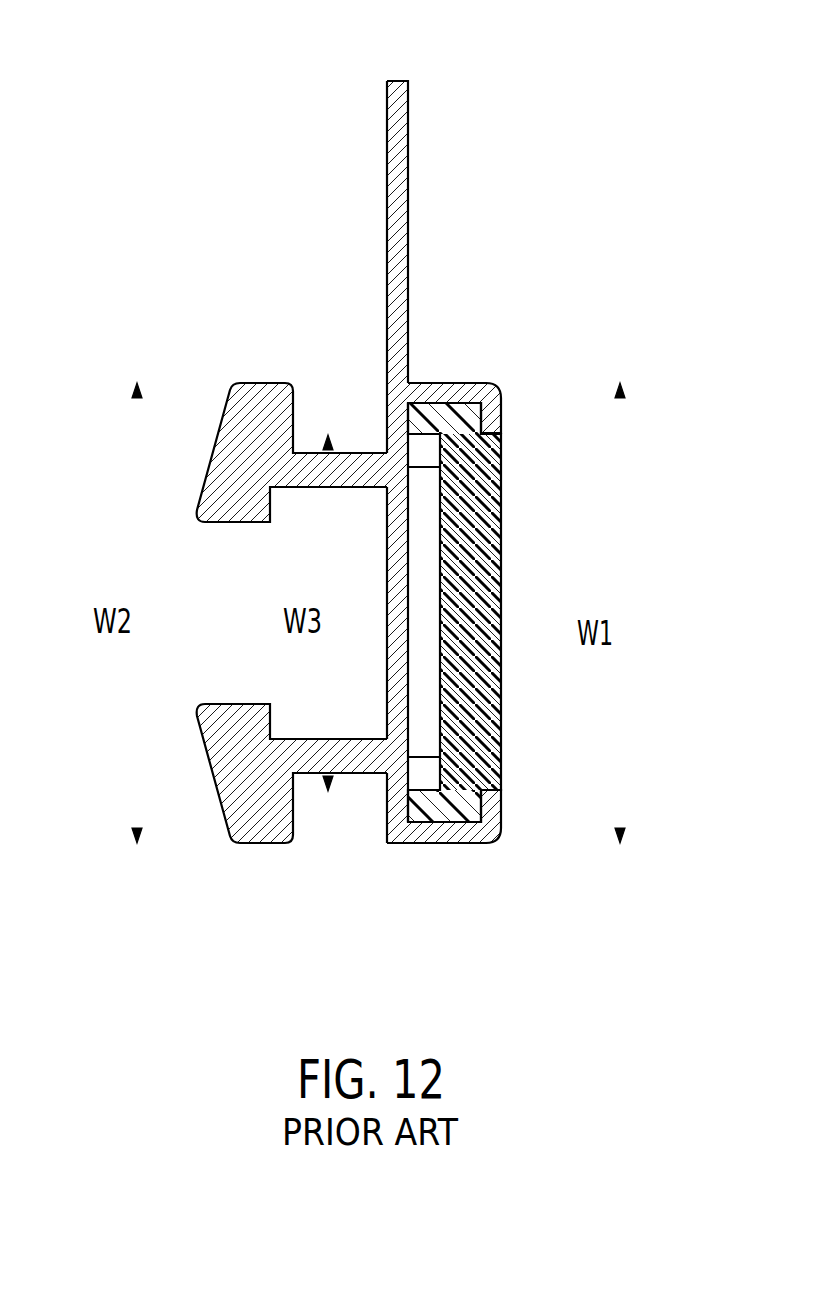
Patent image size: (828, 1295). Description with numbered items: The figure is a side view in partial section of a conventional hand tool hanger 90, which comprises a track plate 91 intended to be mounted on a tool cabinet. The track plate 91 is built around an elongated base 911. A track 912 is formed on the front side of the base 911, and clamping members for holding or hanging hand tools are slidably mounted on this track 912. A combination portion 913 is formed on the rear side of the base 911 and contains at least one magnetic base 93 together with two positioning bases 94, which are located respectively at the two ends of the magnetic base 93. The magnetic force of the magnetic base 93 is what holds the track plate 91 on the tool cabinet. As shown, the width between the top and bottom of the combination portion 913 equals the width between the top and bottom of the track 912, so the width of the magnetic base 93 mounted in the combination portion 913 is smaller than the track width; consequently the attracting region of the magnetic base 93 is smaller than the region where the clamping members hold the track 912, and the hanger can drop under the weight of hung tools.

The conventional hand tool hanger 90 is at (317, 59).
The track plate 91 is at (323, 318).
The base 911 is at (398, 277).
The track 912 is at (263, 400).
The combination portion 913 is at (458, 380).
The magnetic base 93 is at (423, 735).
The positioning base 94 is at (478, 535).